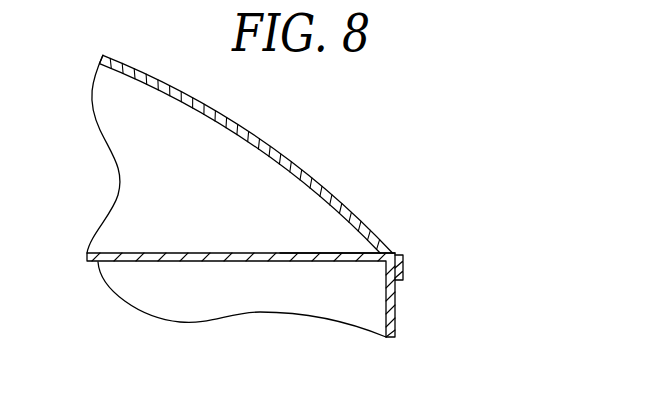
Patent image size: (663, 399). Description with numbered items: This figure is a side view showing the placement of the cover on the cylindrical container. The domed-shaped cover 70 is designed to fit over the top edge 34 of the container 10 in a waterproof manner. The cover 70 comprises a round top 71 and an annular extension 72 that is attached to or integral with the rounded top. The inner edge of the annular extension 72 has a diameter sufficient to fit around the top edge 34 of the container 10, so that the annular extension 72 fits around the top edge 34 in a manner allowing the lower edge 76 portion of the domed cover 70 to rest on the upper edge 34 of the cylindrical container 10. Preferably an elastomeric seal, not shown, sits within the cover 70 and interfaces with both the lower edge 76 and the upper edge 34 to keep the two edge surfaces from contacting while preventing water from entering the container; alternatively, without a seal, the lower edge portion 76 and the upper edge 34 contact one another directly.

The cylindrical container 10 is at (412, 333).
The top edge of the container 34 is at (348, 262).
The domed-shaped cover 70 is at (290, 192).
The round top 71 is at (282, 153).
The annular extension 72 is at (400, 268).
The lower edge portion 76 is at (290, 253).